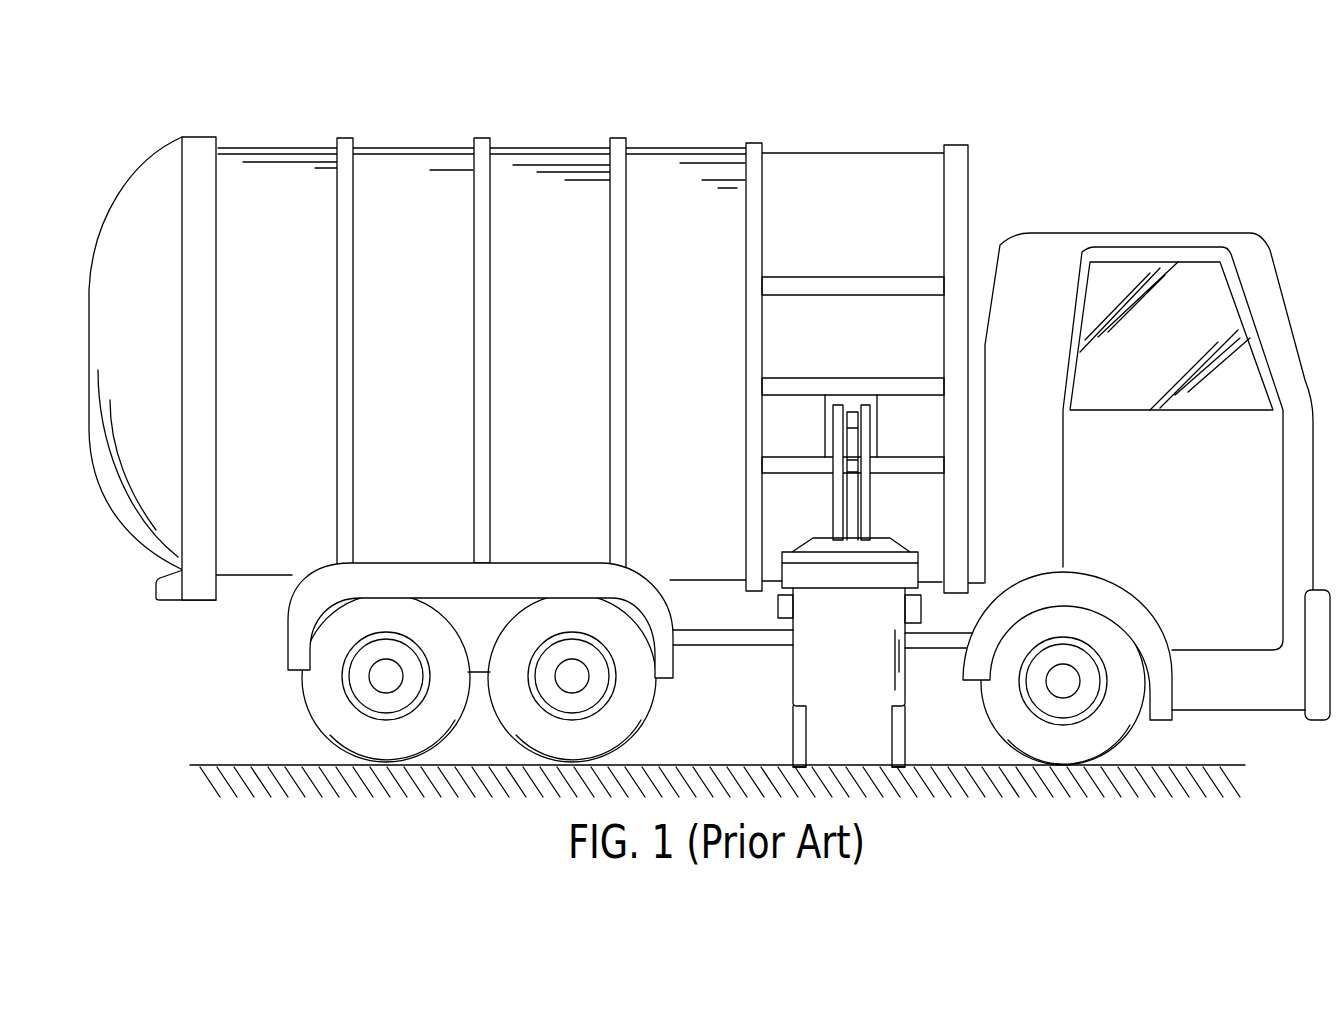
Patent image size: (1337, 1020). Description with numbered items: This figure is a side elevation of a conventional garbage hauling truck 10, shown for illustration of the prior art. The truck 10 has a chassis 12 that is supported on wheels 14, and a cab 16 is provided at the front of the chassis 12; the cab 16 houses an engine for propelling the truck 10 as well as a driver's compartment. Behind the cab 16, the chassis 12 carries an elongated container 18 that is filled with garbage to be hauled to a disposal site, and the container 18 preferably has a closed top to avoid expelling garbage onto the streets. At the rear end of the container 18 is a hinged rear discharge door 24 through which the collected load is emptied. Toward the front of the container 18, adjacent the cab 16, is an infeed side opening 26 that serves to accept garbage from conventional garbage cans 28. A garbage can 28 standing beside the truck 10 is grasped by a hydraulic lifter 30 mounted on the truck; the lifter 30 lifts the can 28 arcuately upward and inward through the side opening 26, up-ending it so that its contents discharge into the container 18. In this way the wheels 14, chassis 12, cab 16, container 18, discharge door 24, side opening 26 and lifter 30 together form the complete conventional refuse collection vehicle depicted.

The garbage hauling truck 10 is at (278, 102).
The chassis 12 is at (707, 648).
The wheels 14 is at (313, 721).
The cab 16 is at (1130, 233).
The elongated container 18 is at (415, 147).
The hinged rear discharge door 24 is at (139, 188).
The infeed side opening 26 is at (875, 178).
The garbage can 28 is at (793, 678).
The hydraulic lifter 30 is at (833, 500).